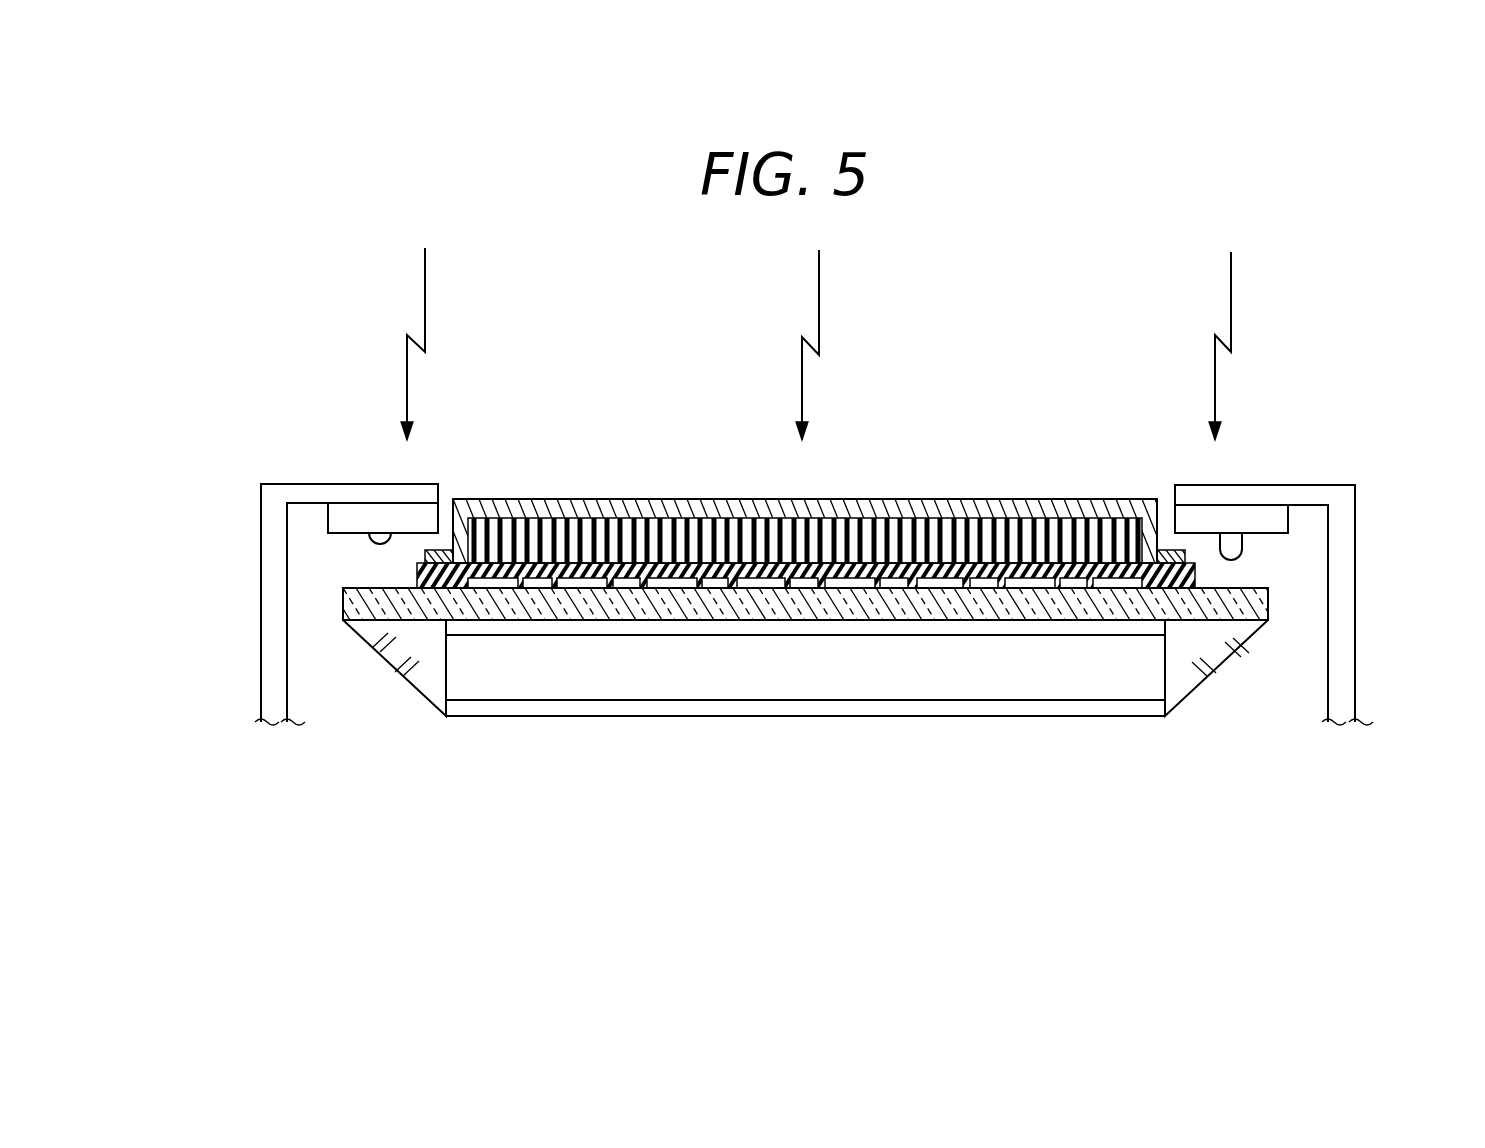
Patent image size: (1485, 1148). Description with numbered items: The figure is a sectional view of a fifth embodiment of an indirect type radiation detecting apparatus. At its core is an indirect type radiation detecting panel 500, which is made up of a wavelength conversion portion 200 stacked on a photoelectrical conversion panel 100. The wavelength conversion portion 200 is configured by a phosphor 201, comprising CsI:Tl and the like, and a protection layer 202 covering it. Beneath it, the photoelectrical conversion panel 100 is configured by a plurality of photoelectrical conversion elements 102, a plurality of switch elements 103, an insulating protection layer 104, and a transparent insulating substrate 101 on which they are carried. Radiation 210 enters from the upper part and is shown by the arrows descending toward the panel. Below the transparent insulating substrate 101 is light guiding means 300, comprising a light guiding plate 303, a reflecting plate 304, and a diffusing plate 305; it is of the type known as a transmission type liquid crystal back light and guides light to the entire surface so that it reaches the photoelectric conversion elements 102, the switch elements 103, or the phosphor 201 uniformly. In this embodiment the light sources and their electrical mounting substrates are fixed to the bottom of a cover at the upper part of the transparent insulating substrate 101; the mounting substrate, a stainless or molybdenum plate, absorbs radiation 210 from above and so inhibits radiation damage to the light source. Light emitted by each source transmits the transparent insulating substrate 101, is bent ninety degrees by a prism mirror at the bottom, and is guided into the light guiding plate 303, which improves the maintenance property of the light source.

The photoelectrical conversion panel 100 is at (243, 563).
The transparent insulating substrate 101 is at (1260, 610).
The photoelectrical conversion element 102 is at (1130, 586).
The switch element 103 is at (1073, 580).
The insulating protection layer 104 is at (415, 567).
The wavelength conversion portion 200 is at (243, 498).
The phosphor 201 is at (868, 532).
The protection layer 202 is at (1003, 505).
The radiation 210 is at (819, 302).
The light guiding means 300 is at (818, 802).
The light guiding plate 303 is at (570, 680).
The reflecting plate 304 is at (685, 708).
The diffusing plate 305 is at (777, 628).
The indirect type radiation detecting panel 500 is at (182, 493).